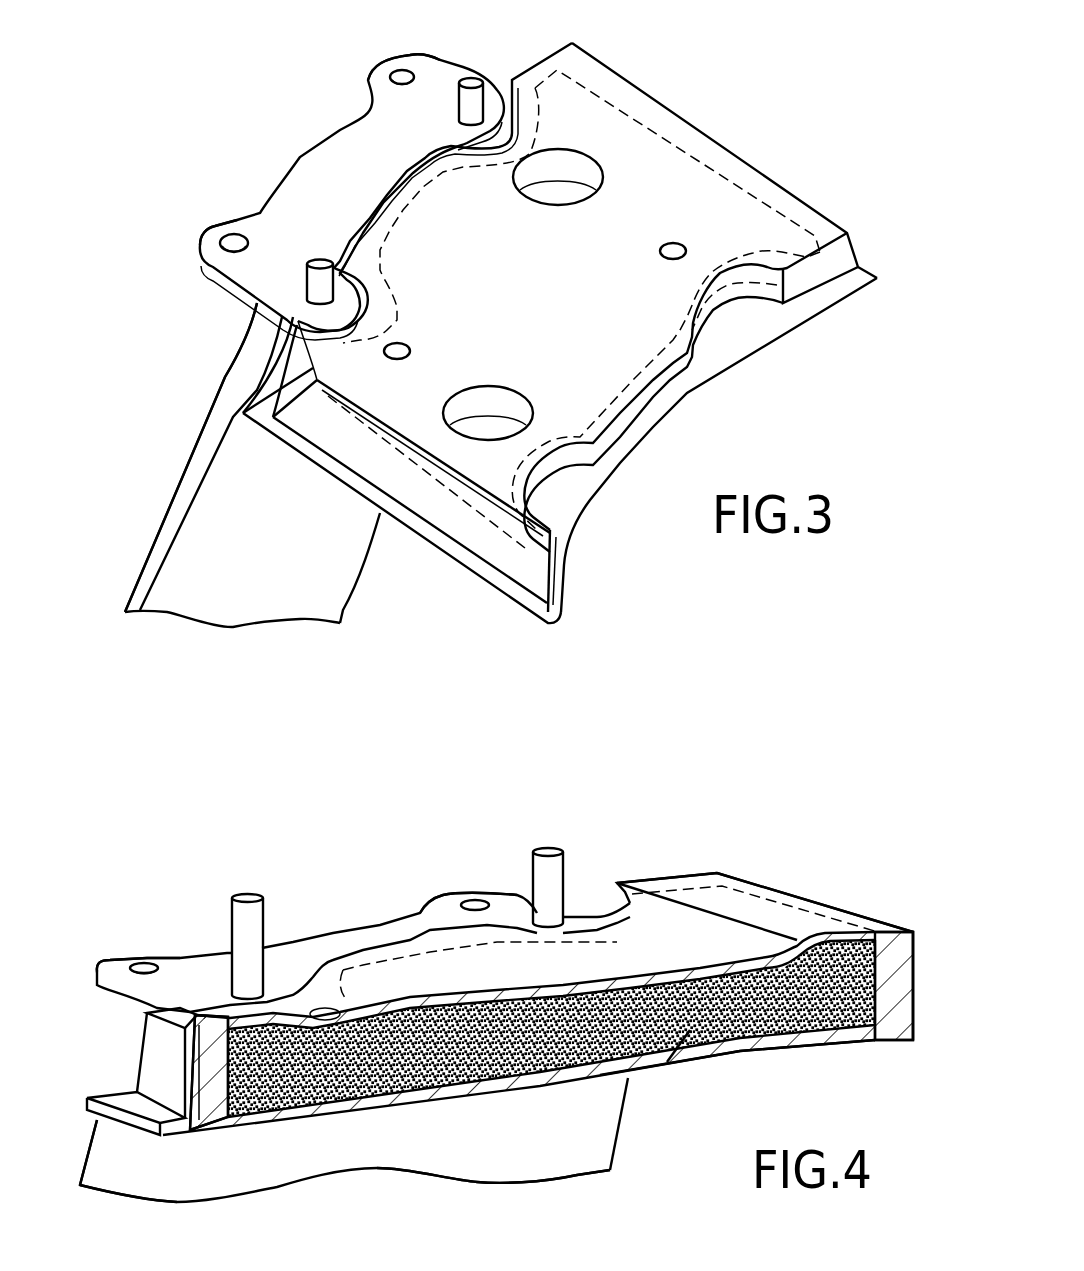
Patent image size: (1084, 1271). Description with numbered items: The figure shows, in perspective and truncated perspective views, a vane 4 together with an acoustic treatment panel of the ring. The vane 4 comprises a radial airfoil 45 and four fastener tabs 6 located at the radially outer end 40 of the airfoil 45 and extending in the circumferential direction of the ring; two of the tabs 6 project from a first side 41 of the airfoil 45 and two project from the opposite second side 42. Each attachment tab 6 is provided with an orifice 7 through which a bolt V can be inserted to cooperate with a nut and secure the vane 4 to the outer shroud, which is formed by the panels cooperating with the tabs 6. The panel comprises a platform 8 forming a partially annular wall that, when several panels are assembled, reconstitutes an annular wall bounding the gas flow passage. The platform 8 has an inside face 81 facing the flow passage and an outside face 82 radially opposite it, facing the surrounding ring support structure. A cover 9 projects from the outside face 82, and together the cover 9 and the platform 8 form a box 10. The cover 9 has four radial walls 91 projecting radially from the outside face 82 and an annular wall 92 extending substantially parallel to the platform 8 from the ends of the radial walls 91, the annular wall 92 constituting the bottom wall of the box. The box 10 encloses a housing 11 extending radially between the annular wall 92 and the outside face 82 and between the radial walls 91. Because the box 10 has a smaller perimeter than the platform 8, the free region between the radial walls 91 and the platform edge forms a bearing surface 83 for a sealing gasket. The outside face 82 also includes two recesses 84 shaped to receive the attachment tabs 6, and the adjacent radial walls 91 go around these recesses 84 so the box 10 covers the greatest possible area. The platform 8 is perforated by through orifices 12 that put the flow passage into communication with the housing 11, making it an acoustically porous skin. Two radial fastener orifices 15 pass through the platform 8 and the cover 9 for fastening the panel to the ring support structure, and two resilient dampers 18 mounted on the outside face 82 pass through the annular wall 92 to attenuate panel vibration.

In FIG. 3, the vane 4 is at (185, 482).
In FIG. 4, the vane 4 is at (580, 1137).
In FIG. 3, the fastener tab 6 is at (378, 70).
In FIG. 4, the fastener tab 6 is at (115, 965).
In FIG. 3, the orifice 7 is at (402, 69).
In FIG. 4, the orifice 7 is at (148, 963).
In FIG. 3, the bolt V is at (462, 106).
In FIG. 4, the bolt V is at (250, 918).
In FIG. 3, the platform 8 is at (861, 272).
In FIG. 4, the platform 8 is at (767, 1052).
In FIG. 3, the cover 9 is at (800, 196).
In FIG. 4, the cover 9 is at (770, 888).
In FIG. 4, the box 10 is at (857, 895).
In FIG. 4, the housing 11 is at (830, 986).
In FIG. 3, the through orifice 12 is at (306, 598).
In FIG. 3, the radial fastener orifice 15 is at (562, 172).
In FIG. 3, the resilient damper 18 is at (662, 254).
In FIG. 3, the radially outer end 40 is at (338, 135).
In FIG. 4, the radially outer end 40 is at (373, 936).
In FIG. 3, the first side 41 is at (194, 407).
In FIG. 4, the second side 42 is at (570, 1105).
In FIG. 3, the radial airfoil 45 is at (195, 540).
In FIG. 4, the radial airfoil 45 is at (140, 1148).
In FIG. 4, the inside face 81 is at (830, 1056).
In FIG. 3, the outside face 82 is at (553, 612).
In FIG. 4, the outside face 82 is at (690, 1030).
In FIG. 3, the bearing surface 83 is at (640, 416).
In FIG. 4, the bearing surface 83 is at (127, 1102).
In FIG. 3, the recess 84 is at (718, 321).
In FIG. 3, the radial wall 91 is at (850, 240).
In FIG. 4, the radial wall 91 is at (900, 953).
In FIG. 4, the annular wall 92 is at (683, 878).